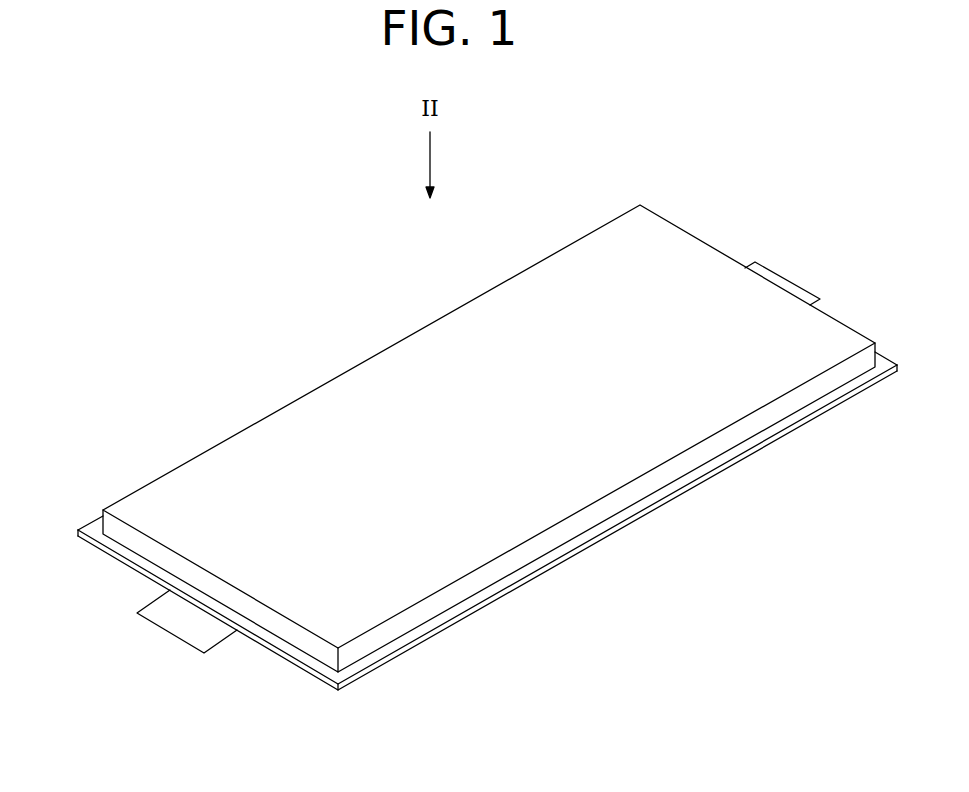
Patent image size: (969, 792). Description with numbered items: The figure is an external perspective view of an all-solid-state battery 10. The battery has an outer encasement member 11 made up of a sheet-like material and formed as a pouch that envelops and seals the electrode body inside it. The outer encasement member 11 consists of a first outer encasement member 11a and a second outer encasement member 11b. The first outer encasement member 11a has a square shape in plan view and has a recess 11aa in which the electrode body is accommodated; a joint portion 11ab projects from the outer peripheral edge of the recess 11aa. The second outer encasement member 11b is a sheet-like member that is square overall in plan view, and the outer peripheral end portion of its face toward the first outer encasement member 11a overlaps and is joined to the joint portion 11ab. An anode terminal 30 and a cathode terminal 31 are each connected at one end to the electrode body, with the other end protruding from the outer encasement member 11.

The all-solid-state battery 10 is at (278, 220).
The outer encasement member 11 is at (189, 329).
The first outer encasement member 11a is at (327, 344).
The recess 11aa is at (437, 345).
The joint portion 11ab is at (85, 527).
The second outer encasement member 11b is at (533, 575).
The anode terminal 30 is at (779, 281).
The cathode terminal 31 is at (170, 627).